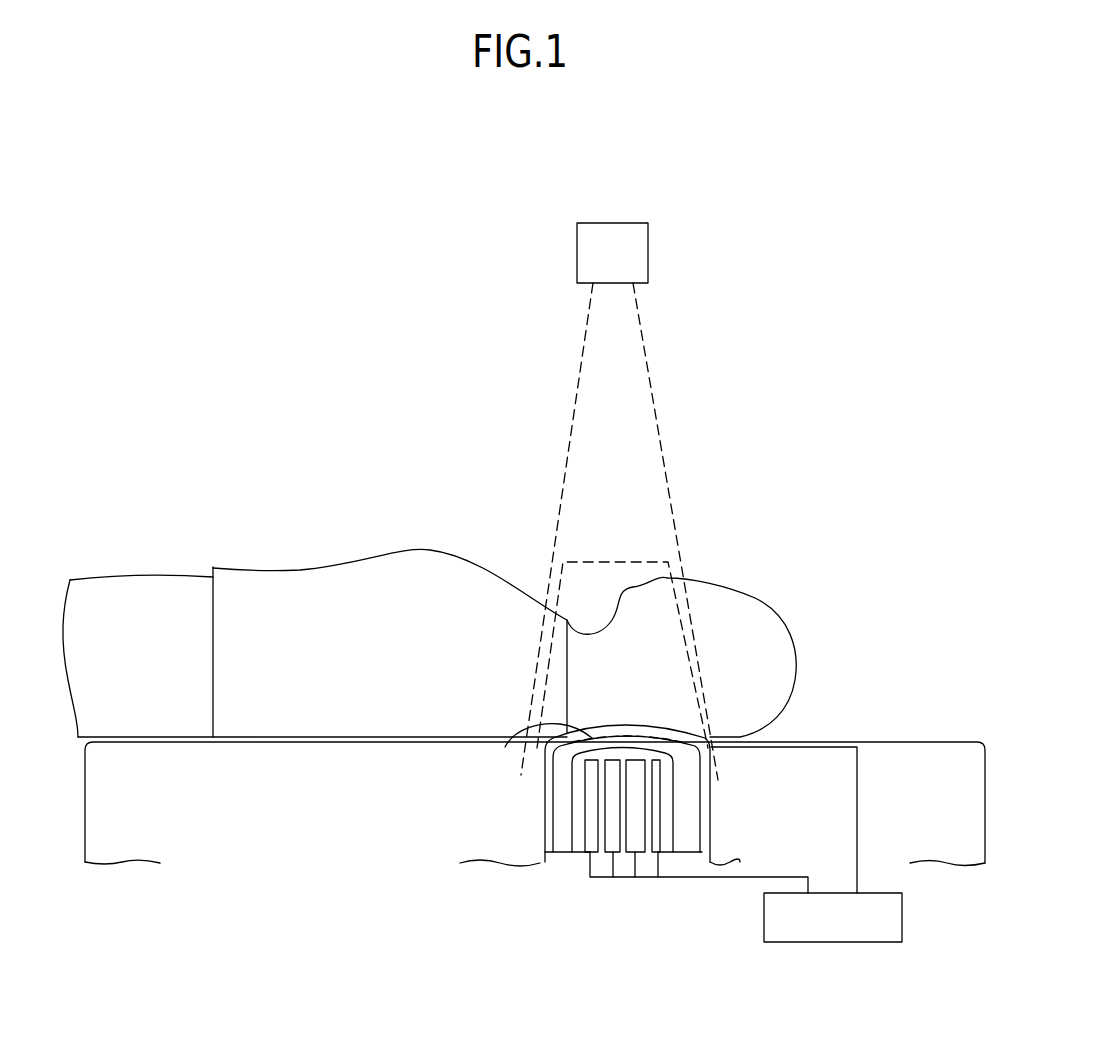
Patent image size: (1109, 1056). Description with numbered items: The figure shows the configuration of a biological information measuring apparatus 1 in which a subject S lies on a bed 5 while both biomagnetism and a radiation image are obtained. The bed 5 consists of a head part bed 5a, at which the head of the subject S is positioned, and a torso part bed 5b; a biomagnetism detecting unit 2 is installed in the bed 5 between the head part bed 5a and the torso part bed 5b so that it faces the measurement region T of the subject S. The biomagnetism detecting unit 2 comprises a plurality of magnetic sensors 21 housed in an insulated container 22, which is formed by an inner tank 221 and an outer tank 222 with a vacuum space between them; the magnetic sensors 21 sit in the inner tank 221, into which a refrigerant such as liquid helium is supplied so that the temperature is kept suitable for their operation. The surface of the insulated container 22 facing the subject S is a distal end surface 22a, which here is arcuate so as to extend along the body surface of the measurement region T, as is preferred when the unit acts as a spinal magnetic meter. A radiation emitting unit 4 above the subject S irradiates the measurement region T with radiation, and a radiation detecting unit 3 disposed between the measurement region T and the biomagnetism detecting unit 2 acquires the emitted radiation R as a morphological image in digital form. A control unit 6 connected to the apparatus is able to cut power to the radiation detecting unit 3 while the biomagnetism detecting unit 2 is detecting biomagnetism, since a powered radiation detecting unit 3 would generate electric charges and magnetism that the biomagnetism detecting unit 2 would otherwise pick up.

The biological information measuring apparatus 1 is at (853, 506).
The biomagnetism detecting unit 2 is at (550, 772).
The magnetic sensors 21 is at (585, 787).
The insulated container 22 is at (568, 744).
The inner tank 221 is at (572, 807).
The outer tank 222 is at (545, 829).
The distal end surface 22a is at (690, 742).
The radiation detecting unit 3 is at (548, 745).
The radiation emitting unit 4 is at (612, 223).
The bed 5 is at (535, 870).
The head part bed 5a is at (846, 842).
The torso part bed 5b is at (510, 860).
The control unit 6 is at (830, 942).
The emitted radiation R is at (662, 421).
The subject S is at (475, 592).
The measurement region T is at (662, 556).